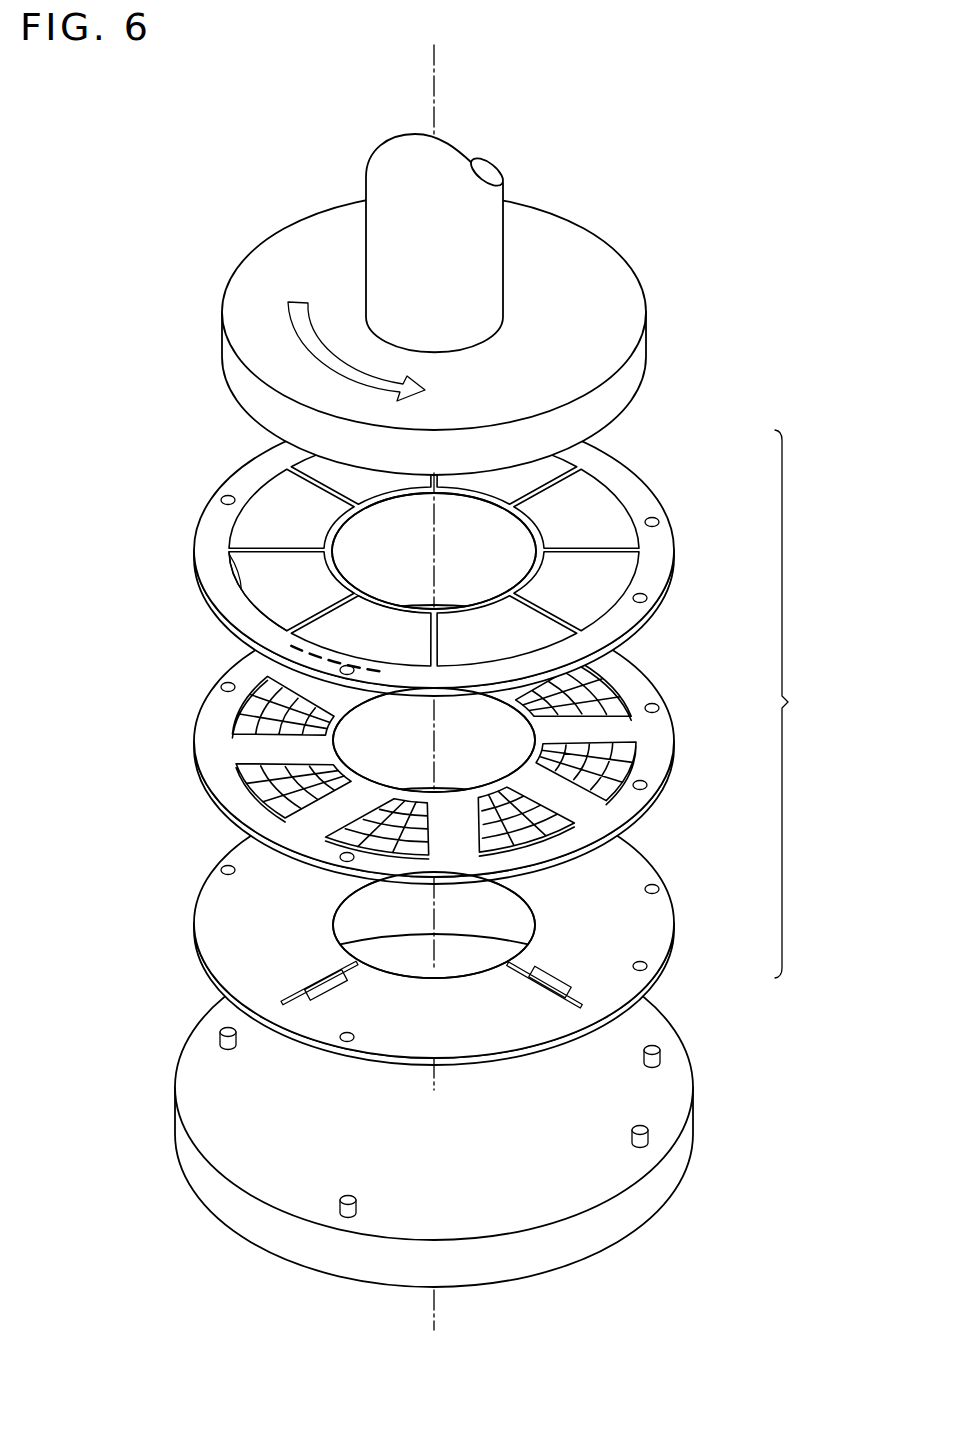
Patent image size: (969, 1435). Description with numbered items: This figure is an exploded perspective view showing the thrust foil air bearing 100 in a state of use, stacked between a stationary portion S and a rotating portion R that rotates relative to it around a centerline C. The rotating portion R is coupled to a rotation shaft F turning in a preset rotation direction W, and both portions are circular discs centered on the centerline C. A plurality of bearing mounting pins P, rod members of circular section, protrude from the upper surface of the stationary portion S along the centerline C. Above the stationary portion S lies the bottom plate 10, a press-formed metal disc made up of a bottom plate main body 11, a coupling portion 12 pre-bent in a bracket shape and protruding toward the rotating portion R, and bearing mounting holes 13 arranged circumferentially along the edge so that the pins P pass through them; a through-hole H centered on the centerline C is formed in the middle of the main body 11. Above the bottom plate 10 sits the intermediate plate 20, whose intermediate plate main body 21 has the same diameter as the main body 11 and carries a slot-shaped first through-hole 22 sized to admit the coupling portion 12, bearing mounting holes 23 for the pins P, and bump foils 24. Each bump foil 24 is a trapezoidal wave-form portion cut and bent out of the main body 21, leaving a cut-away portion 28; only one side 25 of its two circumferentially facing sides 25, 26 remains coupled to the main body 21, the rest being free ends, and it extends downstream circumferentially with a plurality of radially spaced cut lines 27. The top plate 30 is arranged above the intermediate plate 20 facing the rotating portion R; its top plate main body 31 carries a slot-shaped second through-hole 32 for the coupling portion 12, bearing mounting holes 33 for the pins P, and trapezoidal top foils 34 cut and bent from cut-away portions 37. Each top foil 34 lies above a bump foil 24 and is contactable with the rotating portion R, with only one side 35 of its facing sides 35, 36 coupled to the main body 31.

The thrust foil air bearing 100 is at (806, 704).
The bottom plate 10 is at (470, 926).
The bottom plate main body 11 is at (660, 920).
The coupling portion 12 is at (318, 978).
The bearing mounting hole 13 is at (662, 893).
The intermediate plate 20 is at (444, 744).
The intermediate plate main body 21 is at (660, 739).
The first through-hole 22 is at (252, 832).
The bearing mounting hole 23 is at (667, 712).
The bump foil 24 is at (250, 770).
The one side 25 is at (246, 773).
The other side 26 is at (358, 786).
The cut line 27 is at (252, 727).
The cut-away portion 28 is at (242, 780).
The top plate 30 is at (438, 554).
The top plate main body 31 is at (662, 555).
The second through-hole 32 is at (300, 641).
The bearing mounting hole 33 is at (668, 503).
The top foil 34 is at (257, 582).
The one side 35 is at (257, 558).
The other side 36 is at (362, 593).
The cut-away portion 37 is at (253, 594).
The centerline C is at (436, 85).
The rotation shaft F is at (490, 266).
The rotating portion R is at (646, 293).
The rotation direction W is at (290, 332).
The through-hole H is at (533, 542).
The bearing mounting pin P is at (648, 1138).
The stationary portion S is at (595, 1240).